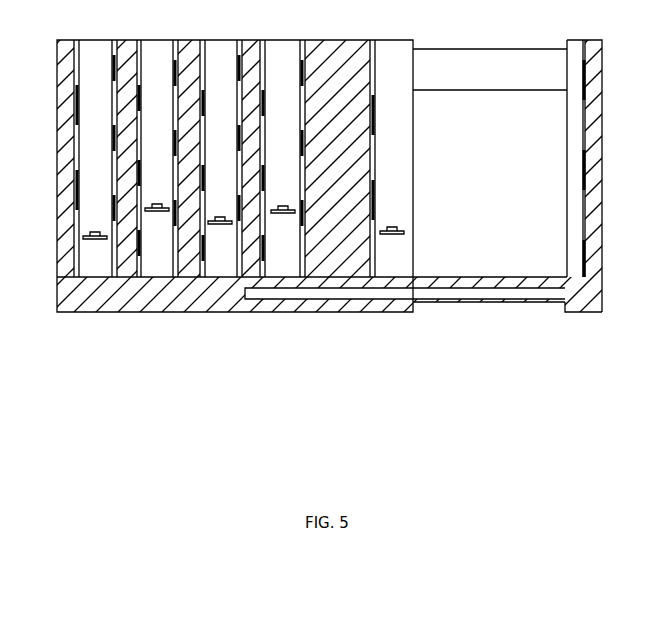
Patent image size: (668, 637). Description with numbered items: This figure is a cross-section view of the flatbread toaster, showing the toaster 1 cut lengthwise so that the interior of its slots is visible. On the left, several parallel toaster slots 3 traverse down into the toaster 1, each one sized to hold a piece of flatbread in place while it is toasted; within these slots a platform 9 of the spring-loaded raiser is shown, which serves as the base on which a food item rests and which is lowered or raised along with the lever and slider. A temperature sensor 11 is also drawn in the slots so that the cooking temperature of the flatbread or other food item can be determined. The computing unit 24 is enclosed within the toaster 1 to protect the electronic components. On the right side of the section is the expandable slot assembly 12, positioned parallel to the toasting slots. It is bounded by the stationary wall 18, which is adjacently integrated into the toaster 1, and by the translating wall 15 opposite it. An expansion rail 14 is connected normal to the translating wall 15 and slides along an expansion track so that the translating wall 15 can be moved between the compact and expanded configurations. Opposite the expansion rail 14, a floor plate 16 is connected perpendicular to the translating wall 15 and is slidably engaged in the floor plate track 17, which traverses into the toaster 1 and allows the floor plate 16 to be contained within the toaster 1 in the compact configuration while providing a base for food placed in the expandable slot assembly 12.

The toaster 1 is at (52, 302).
The toaster slot 3 is at (97, 37).
The platform 9 is at (95, 240).
The temperature sensor 11 is at (157, 206).
The expandable slot assembly 12 is at (602, 106).
The expansion rail 14 is at (498, 51).
The translating wall 15 is at (599, 179).
The floor plate 16 is at (497, 277).
The floor plate track 17 is at (297, 276).
The stationary wall 18 is at (376, 147).
The computing unit 24 is at (63, 145).